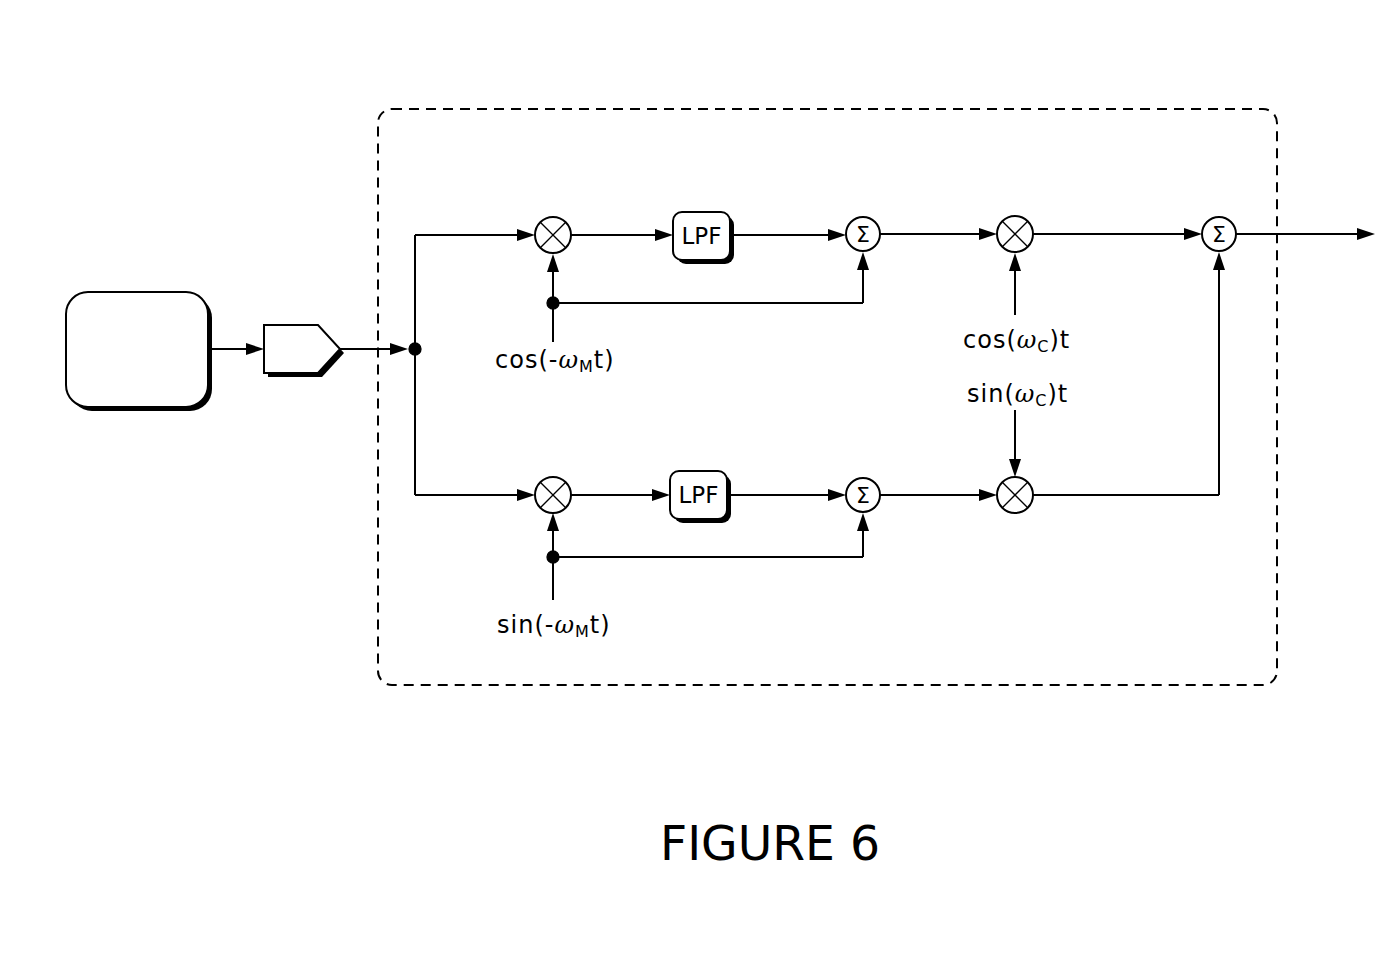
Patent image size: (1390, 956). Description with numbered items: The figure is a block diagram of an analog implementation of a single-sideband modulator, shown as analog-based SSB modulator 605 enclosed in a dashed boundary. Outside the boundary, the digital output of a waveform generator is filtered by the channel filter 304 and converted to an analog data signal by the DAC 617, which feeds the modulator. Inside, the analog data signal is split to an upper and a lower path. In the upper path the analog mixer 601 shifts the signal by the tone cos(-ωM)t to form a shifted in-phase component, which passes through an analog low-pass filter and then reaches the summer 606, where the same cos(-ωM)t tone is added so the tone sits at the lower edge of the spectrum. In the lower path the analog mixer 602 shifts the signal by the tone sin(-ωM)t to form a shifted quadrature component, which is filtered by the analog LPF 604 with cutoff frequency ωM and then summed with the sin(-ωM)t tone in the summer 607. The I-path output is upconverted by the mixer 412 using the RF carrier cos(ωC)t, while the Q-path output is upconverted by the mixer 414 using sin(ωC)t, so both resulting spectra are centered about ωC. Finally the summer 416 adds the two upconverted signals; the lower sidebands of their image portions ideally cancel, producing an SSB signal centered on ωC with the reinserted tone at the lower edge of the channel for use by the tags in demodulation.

The channel filter 304 is at (115, 389).
The DAC 617 is at (295, 325).
The analog-based SSB modulator 605 is at (370, 187).
The analog mixer 601 is at (559, 216).
The analog mixer 602 is at (701, 212).
The summer 606 is at (874, 218).
The mixer 412 is at (1029, 220).
The summer 416 is at (1207, 247).
The analog LPF 604 is at (700, 471).
The summer 607 is at (871, 479).
The mixer 414 is at (1030, 506).